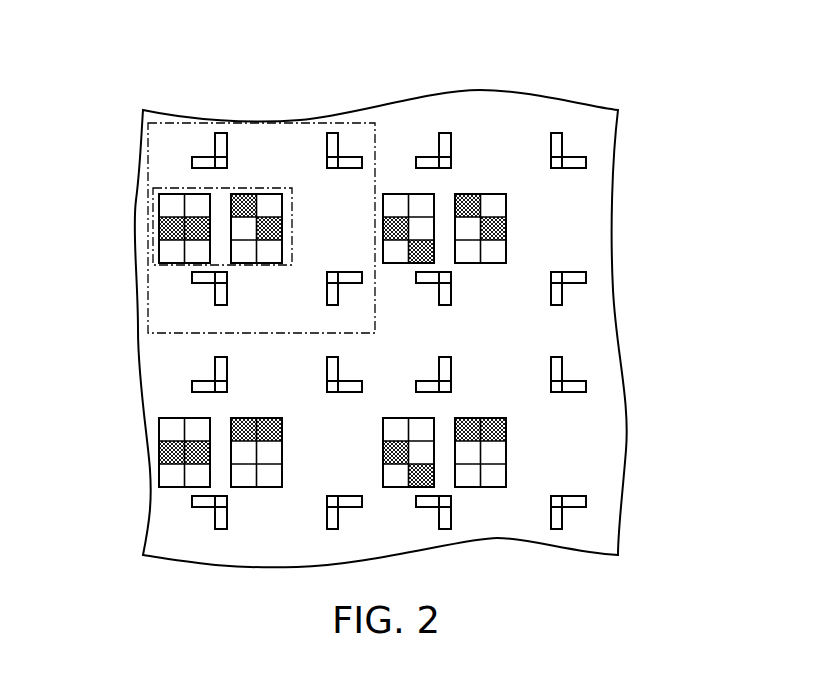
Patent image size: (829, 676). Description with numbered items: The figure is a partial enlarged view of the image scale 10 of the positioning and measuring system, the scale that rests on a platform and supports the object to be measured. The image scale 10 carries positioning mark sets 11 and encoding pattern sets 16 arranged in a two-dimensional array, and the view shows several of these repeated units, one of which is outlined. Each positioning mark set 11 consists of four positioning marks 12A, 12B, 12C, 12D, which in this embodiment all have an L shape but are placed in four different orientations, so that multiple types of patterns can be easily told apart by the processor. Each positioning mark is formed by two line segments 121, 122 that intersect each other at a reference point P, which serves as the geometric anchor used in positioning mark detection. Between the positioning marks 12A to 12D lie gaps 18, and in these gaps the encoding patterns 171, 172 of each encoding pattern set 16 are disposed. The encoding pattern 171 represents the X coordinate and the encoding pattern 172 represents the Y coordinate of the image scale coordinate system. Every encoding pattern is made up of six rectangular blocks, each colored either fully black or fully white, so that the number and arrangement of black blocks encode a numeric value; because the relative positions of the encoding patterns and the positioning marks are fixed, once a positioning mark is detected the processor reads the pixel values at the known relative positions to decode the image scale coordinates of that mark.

The image scale 10 is at (622, 350).
The positioning mark set 11 is at (160, 122).
The positioning mark 12A is at (222, 133).
The positioning mark 12B is at (335, 94).
The positioning mark 12C is at (213, 292).
The positioning mark 12D is at (328, 297).
The line segment 121 is at (355, 160).
The line segment 122 is at (332, 140).
The encoding pattern set 16 is at (168, 187).
The encoding pattern 171 is at (160, 215).
The encoding pattern 172 is at (232, 235).
The gap 18 is at (535, 227).
The reference point P is at (328, 166).